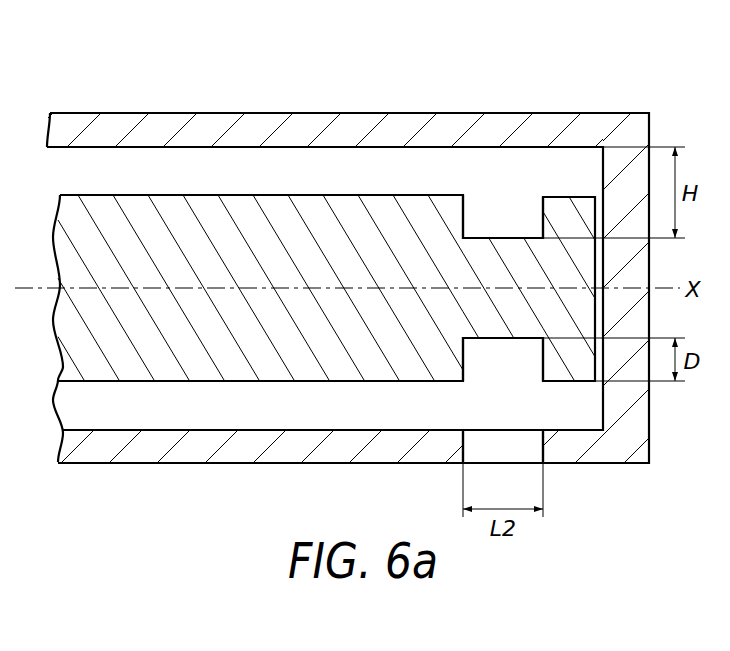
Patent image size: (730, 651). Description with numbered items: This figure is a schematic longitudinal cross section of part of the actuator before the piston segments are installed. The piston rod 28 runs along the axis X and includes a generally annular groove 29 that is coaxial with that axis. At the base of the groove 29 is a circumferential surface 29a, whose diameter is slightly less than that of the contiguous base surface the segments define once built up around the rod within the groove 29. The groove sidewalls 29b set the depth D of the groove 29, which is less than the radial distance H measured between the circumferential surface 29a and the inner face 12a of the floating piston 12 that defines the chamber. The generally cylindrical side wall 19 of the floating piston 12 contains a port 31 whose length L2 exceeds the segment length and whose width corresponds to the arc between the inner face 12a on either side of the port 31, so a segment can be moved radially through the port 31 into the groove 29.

The floating piston 12 is at (358, 110).
The inner face 12a is at (512, 148).
The generally cylindrical side wall 19 is at (232, 453).
The piston rod 28 is at (203, 192).
The groove 29 is at (510, 376).
The circumferential surface 29a is at (502, 238).
The groove sidewalls 29b is at (463, 358).
The port 31 is at (532, 448).